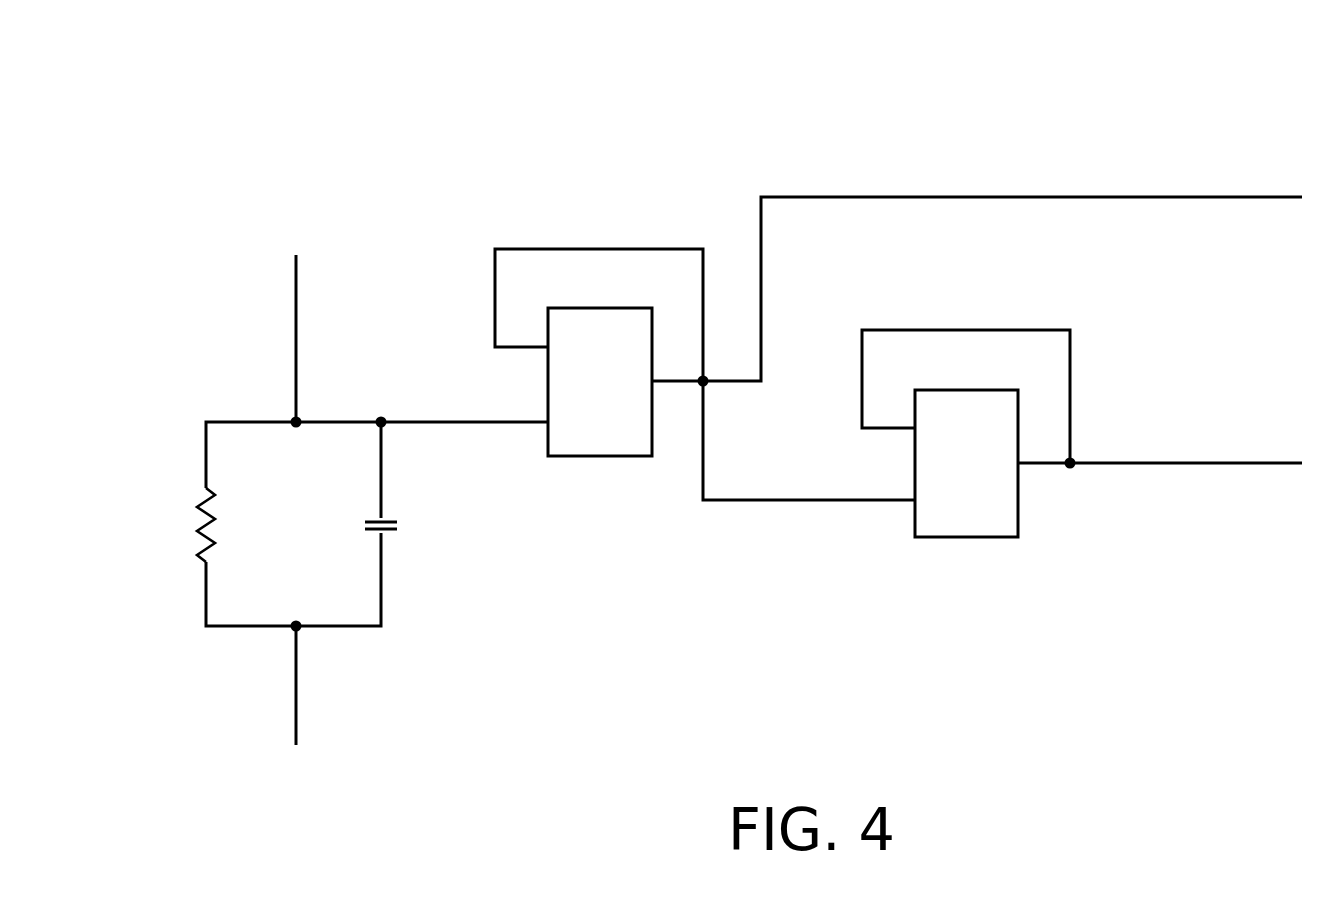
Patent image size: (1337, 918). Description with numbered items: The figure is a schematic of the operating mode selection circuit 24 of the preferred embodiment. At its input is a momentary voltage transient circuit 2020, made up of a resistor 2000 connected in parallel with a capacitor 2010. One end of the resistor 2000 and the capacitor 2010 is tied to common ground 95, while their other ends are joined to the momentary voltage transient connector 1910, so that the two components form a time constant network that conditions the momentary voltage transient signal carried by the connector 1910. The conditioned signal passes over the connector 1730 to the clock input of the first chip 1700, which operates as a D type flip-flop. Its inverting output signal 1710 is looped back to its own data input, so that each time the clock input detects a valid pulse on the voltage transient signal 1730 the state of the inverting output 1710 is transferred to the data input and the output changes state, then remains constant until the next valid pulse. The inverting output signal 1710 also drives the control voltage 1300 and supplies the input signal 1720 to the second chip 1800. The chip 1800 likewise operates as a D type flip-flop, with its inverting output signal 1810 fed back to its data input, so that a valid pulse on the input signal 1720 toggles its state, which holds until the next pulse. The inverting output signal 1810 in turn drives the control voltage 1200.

The operating mode selection circuit 24 is at (393, 128).
The common ground 95 is at (297, 690).
The momentary voltage transient connector 1910 is at (294, 348).
The resistor 2000 is at (197, 530).
The capacitor 2010 is at (397, 525).
The momentary voltage transient circuit 2020 is at (417, 580).
The connector 1730 is at (516, 420).
The chip 1700 is at (632, 458).
The inverting output signal 1710 is at (636, 249).
The control voltage 1300 is at (1222, 197).
The input signal 1720 is at (826, 500).
The chip 1800 is at (963, 537).
The inverting output signal 1810 is at (963, 330).
The control voltage 1200 is at (1215, 463).